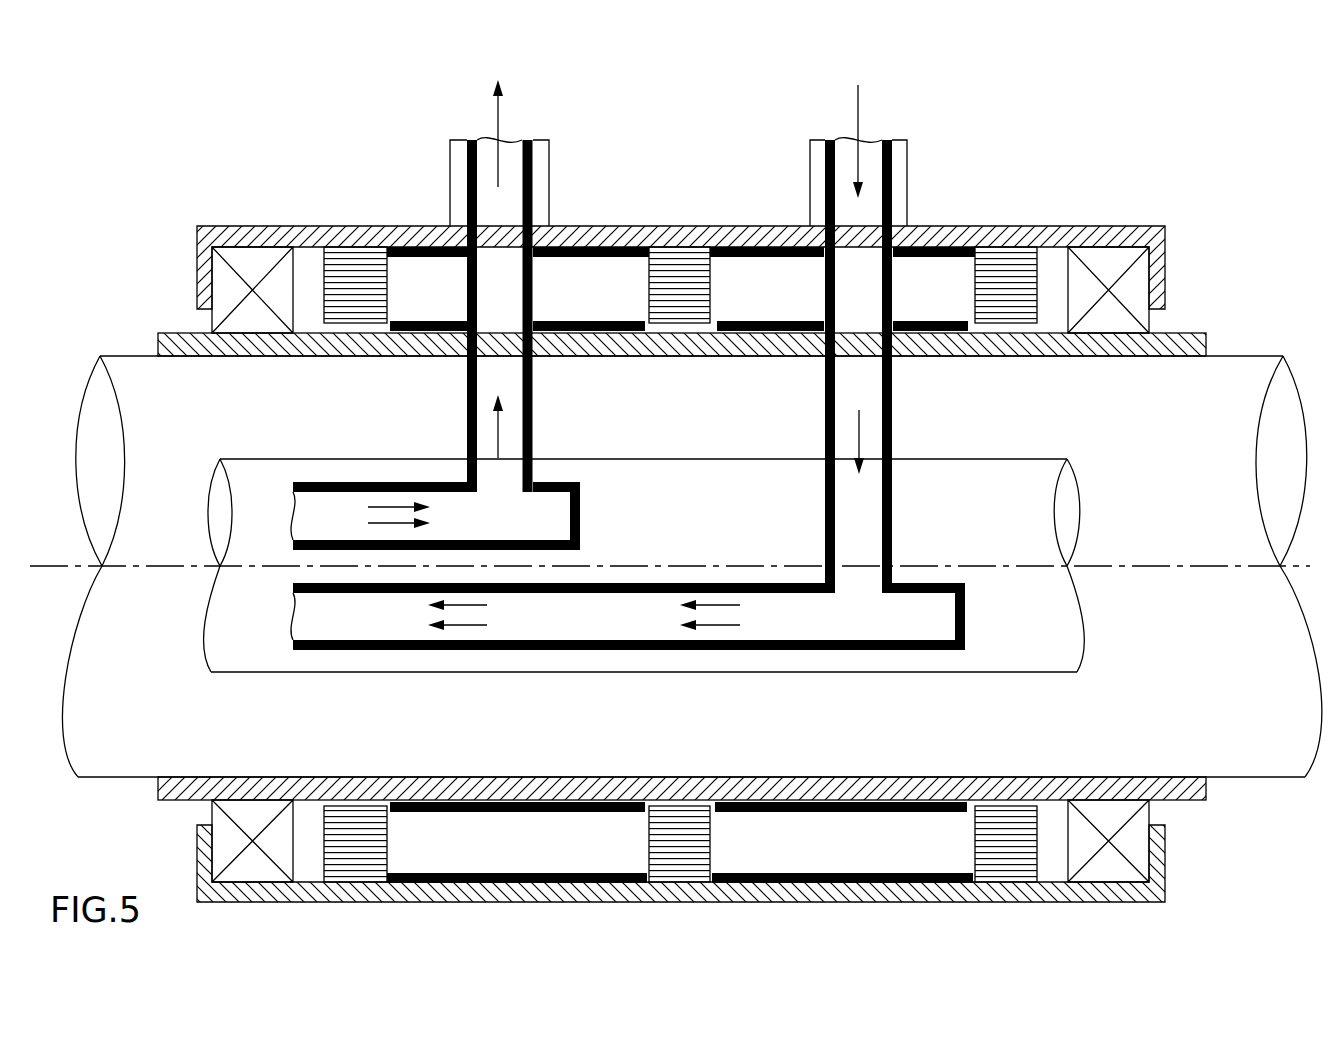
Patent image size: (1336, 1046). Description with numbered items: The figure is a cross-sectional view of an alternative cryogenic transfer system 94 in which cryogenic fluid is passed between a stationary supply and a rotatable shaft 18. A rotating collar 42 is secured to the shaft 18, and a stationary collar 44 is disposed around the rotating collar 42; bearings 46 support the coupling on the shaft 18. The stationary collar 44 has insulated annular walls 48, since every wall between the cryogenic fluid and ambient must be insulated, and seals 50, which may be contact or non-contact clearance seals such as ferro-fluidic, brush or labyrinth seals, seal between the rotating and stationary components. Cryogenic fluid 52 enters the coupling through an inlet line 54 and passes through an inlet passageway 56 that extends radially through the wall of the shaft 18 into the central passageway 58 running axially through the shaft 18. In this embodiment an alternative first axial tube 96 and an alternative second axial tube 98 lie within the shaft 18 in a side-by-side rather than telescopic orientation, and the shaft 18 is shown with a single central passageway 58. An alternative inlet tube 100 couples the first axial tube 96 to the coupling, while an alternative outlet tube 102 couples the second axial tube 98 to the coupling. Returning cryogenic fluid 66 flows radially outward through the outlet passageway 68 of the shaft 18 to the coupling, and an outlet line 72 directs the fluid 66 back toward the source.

The rotatable shaft 18 is at (1262, 356).
The rotating collar 42 is at (1183, 333).
The stationary collar 44 is at (245, 226).
The bearings 46 is at (1113, 263).
The insulated annular walls 48 is at (572, 322).
The seals 50 is at (348, 257).
The cryogenic fluid 52 is at (858, 118).
The inlet line 54 is at (905, 188).
The inlet passageway 56 is at (852, 364).
The central passageway 58 is at (1033, 462).
The cryogenic fluid 66 is at (499, 117).
The outlet passageway 68 is at (493, 363).
The outlet line 72 is at (542, 188).
The cryogenic transfer system 94 is at (1240, 121).
The alternative first axial tube 96 is at (825, 650).
The alternative second axial tube 98 is at (580, 515).
The alternative inlet tube 100 is at (826, 448).
The alternative outlet tube 102 is at (468, 447).